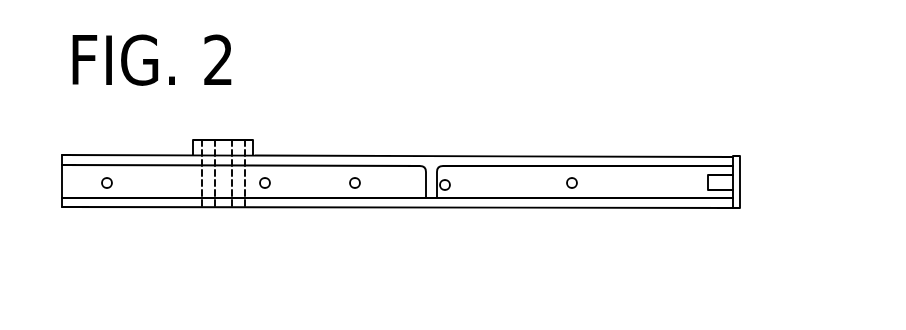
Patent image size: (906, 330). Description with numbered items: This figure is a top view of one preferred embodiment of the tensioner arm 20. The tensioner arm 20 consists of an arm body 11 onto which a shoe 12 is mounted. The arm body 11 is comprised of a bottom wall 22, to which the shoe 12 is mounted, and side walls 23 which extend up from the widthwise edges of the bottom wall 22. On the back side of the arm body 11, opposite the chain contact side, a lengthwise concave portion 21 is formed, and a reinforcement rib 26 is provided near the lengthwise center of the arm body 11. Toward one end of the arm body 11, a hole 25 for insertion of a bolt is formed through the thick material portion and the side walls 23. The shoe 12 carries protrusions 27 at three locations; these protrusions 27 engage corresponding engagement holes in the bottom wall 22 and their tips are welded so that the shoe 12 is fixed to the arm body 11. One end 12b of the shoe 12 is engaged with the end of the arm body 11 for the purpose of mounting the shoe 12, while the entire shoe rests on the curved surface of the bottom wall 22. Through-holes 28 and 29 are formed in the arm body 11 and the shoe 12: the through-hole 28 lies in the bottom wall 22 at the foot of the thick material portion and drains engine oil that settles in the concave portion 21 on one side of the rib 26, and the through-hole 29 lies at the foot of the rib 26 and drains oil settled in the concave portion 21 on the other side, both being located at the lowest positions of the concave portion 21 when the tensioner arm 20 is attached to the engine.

The tensioner arm 20 is at (456, 91).
The arm body 11 is at (494, 154).
The shoe 12 is at (741, 176).
The end of the shoe 12b is at (720, 191).
The concave portion 21 is at (629, 162).
The bottom wall 22 is at (663, 192).
The side walls 23 is at (583, 158).
The hole 25 is at (222, 207).
The reinforcement rib 26 is at (430, 181).
The protrusions 27 is at (108, 188).
The through-hole 28 is at (265, 188).
The through-hole 29 is at (447, 190).